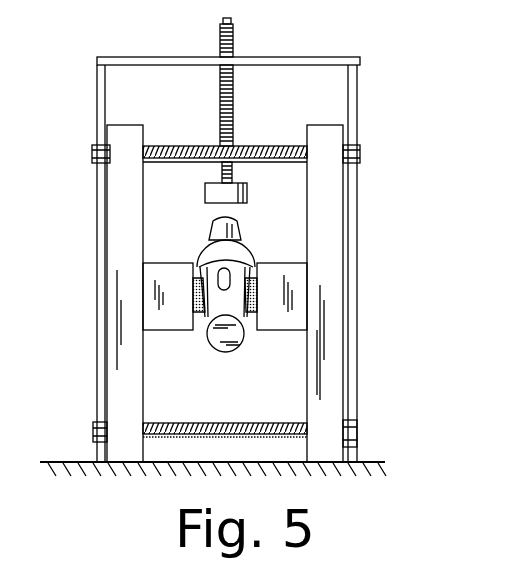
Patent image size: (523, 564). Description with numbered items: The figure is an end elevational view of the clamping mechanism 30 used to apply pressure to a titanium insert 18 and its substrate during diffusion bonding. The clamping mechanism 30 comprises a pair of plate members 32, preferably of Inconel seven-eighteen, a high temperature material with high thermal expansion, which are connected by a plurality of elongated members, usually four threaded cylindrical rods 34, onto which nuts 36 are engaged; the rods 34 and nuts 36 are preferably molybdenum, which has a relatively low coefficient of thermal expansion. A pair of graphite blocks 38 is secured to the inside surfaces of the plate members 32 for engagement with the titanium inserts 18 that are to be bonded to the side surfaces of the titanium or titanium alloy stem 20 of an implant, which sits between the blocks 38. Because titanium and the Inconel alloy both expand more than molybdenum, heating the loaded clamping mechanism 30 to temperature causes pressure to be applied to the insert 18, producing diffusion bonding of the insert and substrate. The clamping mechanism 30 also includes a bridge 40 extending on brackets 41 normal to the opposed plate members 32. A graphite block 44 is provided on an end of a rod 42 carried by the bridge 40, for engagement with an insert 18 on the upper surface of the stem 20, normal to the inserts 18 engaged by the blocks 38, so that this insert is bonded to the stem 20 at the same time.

The titanium insert 18 is at (192, 288).
The stem 20 is at (227, 352).
The clamping mechanism 30 is at (378, 141).
The plate member 32 is at (330, 311).
The cylindrical rod 34 is at (278, 146).
The nut 36 is at (92, 162).
The graphite block 38 is at (167, 323).
The bridge 40 is at (328, 57).
The bracket 41 is at (357, 237).
The rod 42 is at (234, 34).
The graphite block 44 is at (205, 194).